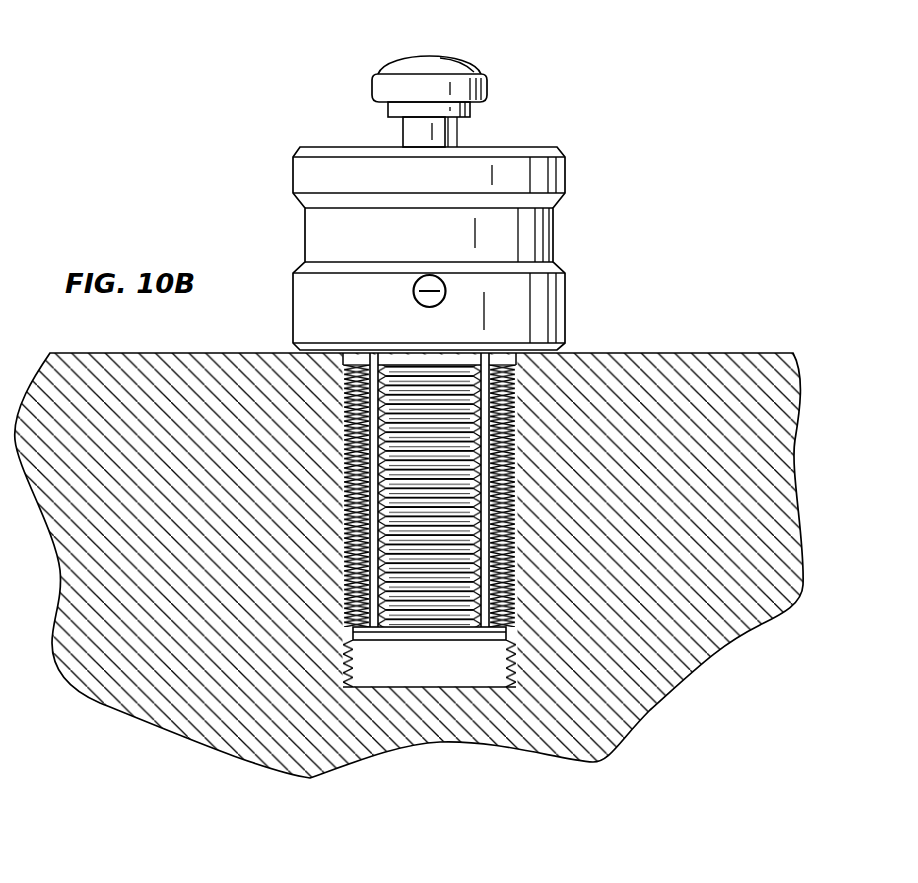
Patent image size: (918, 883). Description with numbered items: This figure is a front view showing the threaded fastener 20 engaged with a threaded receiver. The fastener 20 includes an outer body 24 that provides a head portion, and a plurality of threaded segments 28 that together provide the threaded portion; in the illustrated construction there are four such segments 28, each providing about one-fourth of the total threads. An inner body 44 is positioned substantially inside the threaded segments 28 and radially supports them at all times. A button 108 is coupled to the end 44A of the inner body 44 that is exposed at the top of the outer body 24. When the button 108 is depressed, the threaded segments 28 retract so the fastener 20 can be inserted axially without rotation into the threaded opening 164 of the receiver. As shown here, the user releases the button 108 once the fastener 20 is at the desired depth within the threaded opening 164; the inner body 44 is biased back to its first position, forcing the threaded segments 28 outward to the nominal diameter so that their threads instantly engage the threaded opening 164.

The threaded fastener 20 is at (463, 180).
The outer body 24 is at (567, 318).
The threaded segments 28 is at (408, 612).
The inner body 44 is at (477, 632).
The end of the inner body 44A is at (412, 132).
The button 108 is at (405, 70).
The threaded opening 164 is at (412, 688).